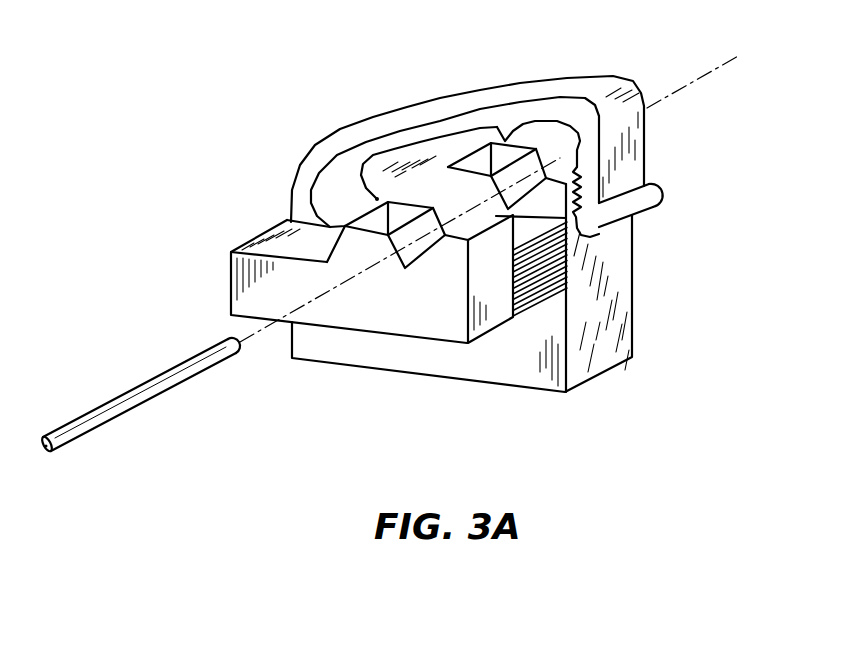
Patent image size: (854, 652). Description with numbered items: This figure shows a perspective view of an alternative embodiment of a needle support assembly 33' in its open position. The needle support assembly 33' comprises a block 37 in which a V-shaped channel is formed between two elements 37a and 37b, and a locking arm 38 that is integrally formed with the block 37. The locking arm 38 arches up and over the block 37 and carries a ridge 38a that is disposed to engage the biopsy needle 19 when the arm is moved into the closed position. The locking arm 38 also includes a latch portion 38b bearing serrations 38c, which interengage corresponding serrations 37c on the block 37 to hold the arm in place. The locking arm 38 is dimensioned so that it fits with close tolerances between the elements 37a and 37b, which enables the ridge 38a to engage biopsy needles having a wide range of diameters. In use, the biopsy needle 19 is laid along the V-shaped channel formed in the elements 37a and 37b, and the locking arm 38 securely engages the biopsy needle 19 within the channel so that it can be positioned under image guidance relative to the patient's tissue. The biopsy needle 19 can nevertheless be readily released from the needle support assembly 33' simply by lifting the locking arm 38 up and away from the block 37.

The needle support assembly 33' is at (206, 43).
The block 37 is at (618, 333).
The element 37a is at (383, 250).
The element 37b is at (468, 188).
The serrations 37c is at (530, 286).
The locking arm 38 is at (390, 121).
The ridge 38a is at (568, 120).
The latch portion 38b is at (639, 168).
The serrations 38c is at (599, 234).
The biopsy needle 19 is at (176, 375).